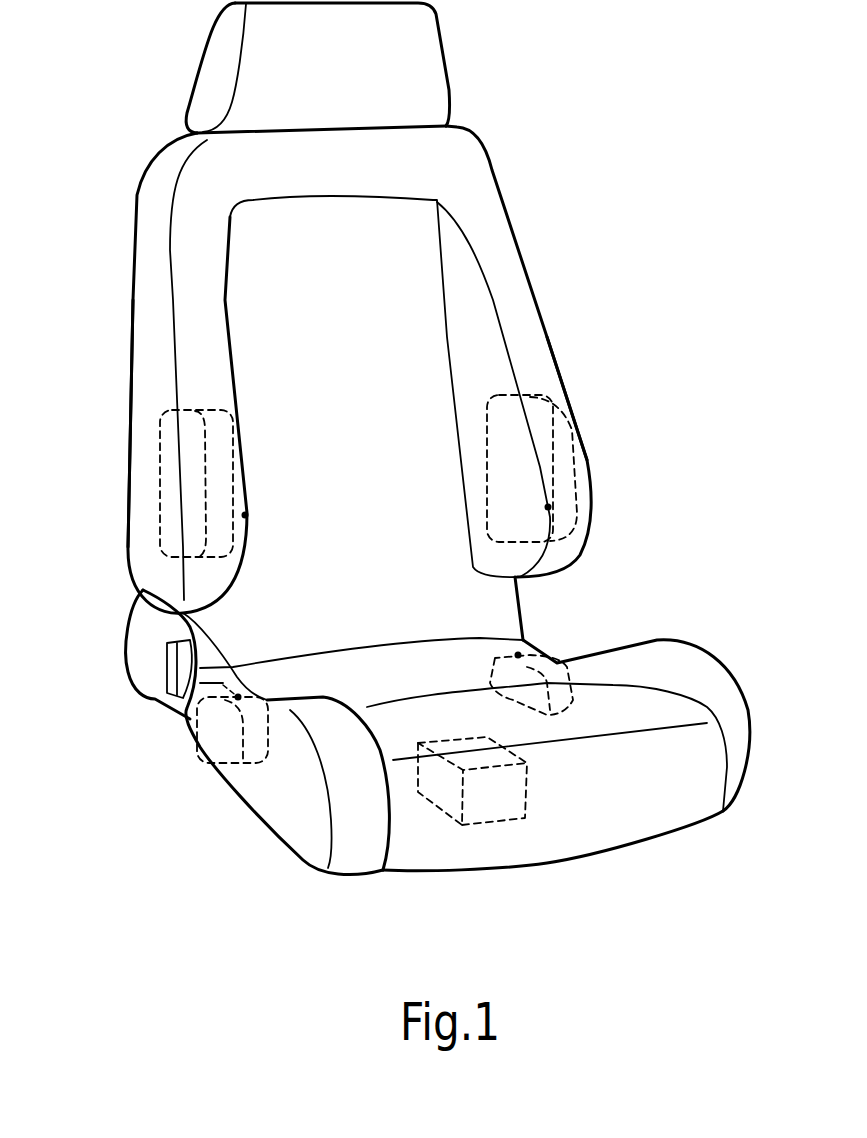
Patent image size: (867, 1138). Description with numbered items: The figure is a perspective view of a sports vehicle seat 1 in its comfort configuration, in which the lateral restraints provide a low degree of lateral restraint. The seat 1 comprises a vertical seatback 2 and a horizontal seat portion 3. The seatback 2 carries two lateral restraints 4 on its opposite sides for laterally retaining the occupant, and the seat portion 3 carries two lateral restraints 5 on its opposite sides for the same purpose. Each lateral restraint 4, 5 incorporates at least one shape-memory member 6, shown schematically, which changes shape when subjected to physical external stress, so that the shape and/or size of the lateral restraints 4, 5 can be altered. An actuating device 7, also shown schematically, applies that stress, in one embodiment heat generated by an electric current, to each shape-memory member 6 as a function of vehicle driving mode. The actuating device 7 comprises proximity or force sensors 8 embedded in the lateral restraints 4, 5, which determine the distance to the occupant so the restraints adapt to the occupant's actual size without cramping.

The sports vehicle seat 1 is at (168, 832).
The seatback 2 is at (400, 305).
The seat portion 3 is at (597, 700).
The lateral restraint 4 is at (187, 485).
The lateral restraint 5 is at (540, 640).
The shape-memory member 6 is at (167, 423).
The actuating device 7 is at (483, 808).
The proximity or force sensor 8 is at (245, 515).